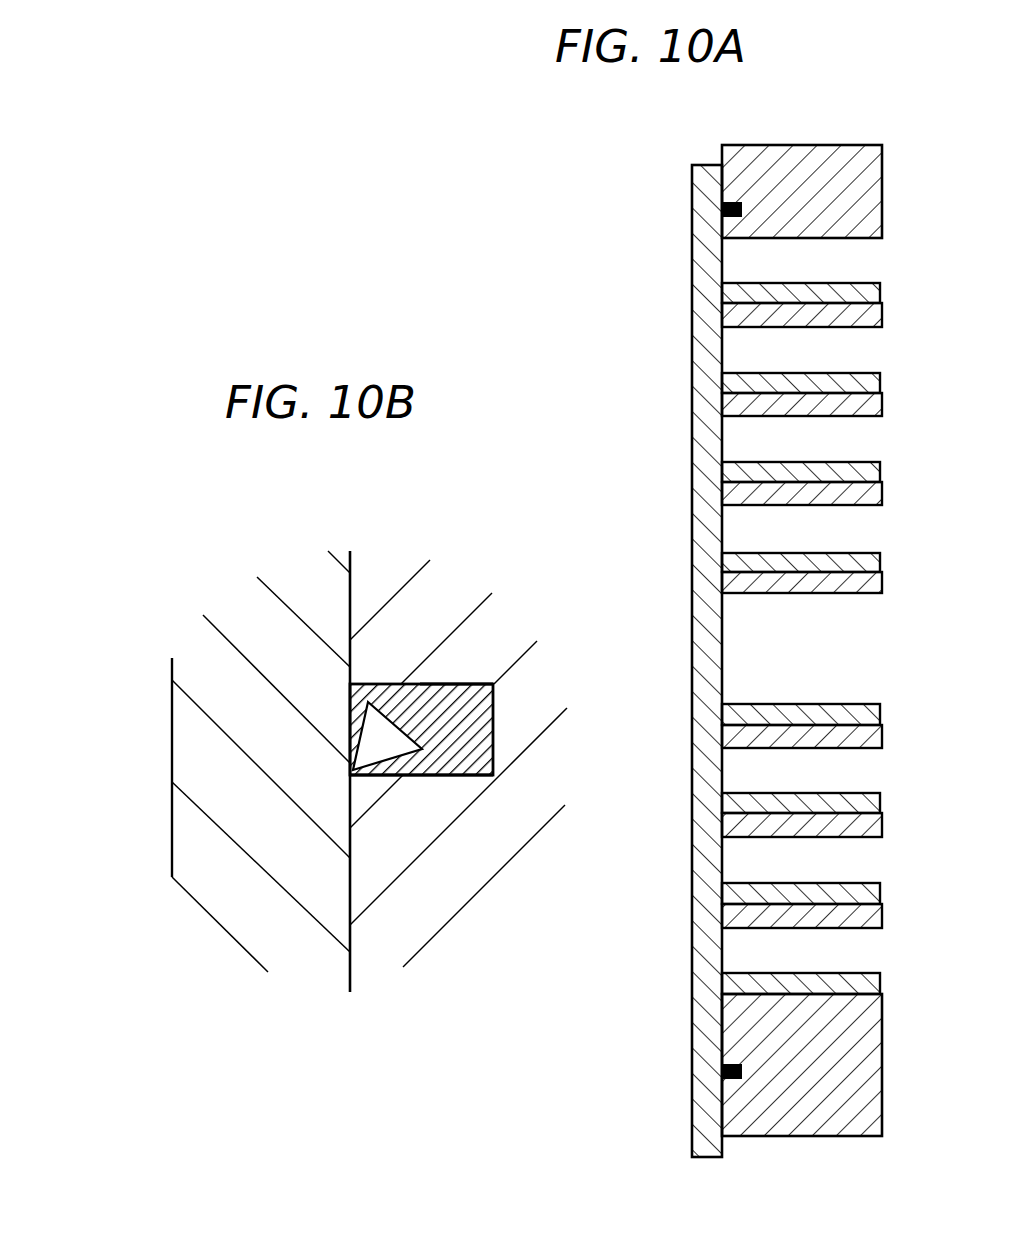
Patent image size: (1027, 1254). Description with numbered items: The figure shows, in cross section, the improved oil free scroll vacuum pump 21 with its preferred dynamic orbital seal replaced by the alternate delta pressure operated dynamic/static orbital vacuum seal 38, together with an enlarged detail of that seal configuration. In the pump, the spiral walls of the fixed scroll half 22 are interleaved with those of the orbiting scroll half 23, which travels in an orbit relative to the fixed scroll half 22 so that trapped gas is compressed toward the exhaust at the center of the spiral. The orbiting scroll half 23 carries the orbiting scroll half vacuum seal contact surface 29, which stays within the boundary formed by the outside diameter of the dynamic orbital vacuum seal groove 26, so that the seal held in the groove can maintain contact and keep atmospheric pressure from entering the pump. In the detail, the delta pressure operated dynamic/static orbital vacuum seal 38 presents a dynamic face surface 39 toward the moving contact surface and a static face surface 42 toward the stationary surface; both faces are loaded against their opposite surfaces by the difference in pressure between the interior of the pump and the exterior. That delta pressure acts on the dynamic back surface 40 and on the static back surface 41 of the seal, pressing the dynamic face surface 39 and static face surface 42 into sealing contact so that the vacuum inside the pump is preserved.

In FIG. 10A, the improved oil free scroll vacuum pump 21 is at (742, 145).
In FIG. 10B, the fixed scroll half 22 is at (463, 893).
In FIG. 10B, the orbiting scroll half 23 is at (242, 697).
In FIG. 10B, the dynamic orbital vacuum seal groove 26 is at (493, 722).
In FIG. 10B, the orbiting scroll half vacuum seal contact surface 29 is at (350, 597).
In FIG. 10B, the delta pressure operated dynamic/static orbital vacuum seal 38 is at (489, 684).
In FIG. 10B, the delta pressure operated dynamic/static orbital vacuum seal dynamic face surface 39 is at (350, 703).
In FIG. 10B, the delta pressure operated dynamic/static orbital vacuum seal dynamic back surface 40 is at (356, 775).
In FIG. 10B, the delta pressure operated dynamic/static orbital vacuum seal static back surface 41 is at (357, 742).
In FIG. 10B, the delta pressure operated dynamic/static orbital vacuum seal static face surface 42 is at (407, 778).